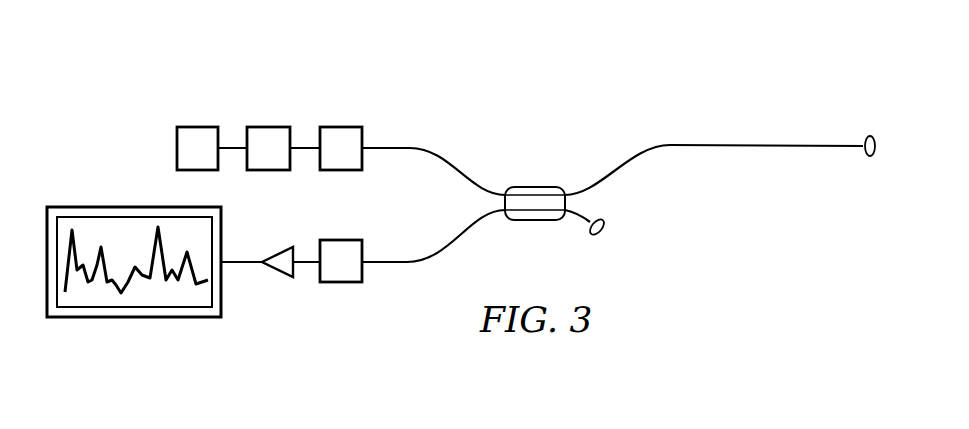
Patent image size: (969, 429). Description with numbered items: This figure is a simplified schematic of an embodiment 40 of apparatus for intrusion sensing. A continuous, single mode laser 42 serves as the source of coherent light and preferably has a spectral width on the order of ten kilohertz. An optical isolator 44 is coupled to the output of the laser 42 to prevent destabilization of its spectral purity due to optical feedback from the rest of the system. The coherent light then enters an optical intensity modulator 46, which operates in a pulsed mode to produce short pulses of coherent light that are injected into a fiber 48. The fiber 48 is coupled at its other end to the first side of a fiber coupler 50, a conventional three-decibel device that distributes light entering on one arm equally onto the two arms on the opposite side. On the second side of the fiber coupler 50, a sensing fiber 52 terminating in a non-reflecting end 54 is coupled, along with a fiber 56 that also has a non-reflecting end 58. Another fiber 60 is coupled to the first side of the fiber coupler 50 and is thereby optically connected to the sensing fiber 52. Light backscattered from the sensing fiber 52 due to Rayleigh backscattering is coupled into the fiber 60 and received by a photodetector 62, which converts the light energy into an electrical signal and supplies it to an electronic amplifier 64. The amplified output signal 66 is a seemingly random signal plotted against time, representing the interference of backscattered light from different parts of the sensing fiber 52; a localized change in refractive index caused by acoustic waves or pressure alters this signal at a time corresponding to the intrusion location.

The intrusion sensing apparatus embodiment 40 is at (548, 86).
The laser 42 is at (195, 127).
The optical isolator 44 is at (265, 127).
The optical intensity modulator 46 is at (336, 127).
The fiber 48 is at (400, 146).
The fiber coupler 50 is at (532, 187).
The sensing fiber 52 is at (690, 145).
The non-reflecting end 54 is at (868, 136).
The fiber 56 is at (586, 213).
The non-reflecting end 58 is at (603, 233).
The fiber 60 is at (410, 263).
The photodetector 62 is at (340, 283).
The electronic amplifier 64 is at (278, 253).
The amplified output signal 66 is at (97, 207).